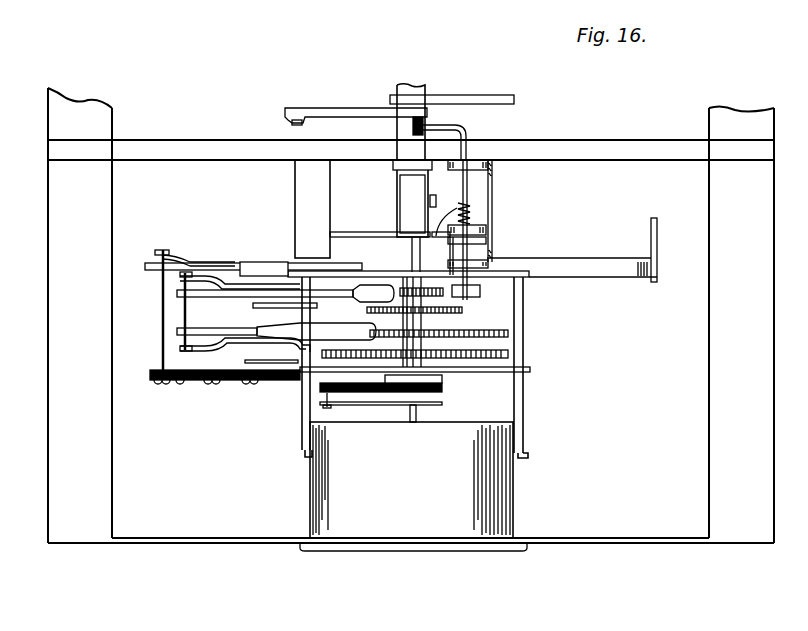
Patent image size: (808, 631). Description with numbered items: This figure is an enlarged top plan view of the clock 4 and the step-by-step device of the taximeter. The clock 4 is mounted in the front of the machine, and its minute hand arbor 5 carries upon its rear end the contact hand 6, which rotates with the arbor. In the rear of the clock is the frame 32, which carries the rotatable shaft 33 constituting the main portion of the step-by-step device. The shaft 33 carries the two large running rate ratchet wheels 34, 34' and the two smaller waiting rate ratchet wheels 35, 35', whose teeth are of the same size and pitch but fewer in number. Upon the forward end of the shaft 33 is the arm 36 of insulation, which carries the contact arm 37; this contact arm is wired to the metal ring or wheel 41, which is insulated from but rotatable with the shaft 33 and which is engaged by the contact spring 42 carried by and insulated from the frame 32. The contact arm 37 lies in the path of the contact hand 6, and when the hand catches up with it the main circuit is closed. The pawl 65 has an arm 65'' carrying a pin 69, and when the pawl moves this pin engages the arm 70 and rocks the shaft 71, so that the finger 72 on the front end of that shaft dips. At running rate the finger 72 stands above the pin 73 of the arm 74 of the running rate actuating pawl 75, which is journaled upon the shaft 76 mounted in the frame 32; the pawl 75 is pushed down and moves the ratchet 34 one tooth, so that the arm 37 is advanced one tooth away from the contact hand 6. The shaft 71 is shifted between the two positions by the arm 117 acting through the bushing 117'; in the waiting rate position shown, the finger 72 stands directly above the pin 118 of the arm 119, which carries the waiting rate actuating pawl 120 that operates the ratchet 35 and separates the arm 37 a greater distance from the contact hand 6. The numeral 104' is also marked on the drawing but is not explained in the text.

The clock 4 is at (411, 480).
The minute hand arbor 5 is at (418, 412).
The contact hand 6 is at (333, 408).
The frame 32 is at (522, 350).
The shaft 33 is at (404, 378).
The running rate ratchet wheel 34 is at (475, 319).
The running rate ratchet wheel 34' is at (468, 342).
The waiting rate ratchet wheel 35 is at (408, 304).
The waiting rate ratchet wheel 35' is at (469, 299).
The arm of insulation 36 is at (402, 394).
The contact arm 37 is at (340, 396).
The metal ring or wheel 41 is at (385, 385).
The contact spring 42 is at (305, 382).
The pawl 65 is at (452, 81).
The arm of pawl 65'' is at (356, 101).
The pin 69 is at (413, 126).
The arm 70 is at (434, 128).
The shaft 71 is at (471, 134).
The finger 72 is at (268, 310).
The pin 73 is at (317, 308).
The arm 74 is at (178, 326).
The running rate actuating pawl 75 is at (276, 341).
The shaft 76 is at (210, 382).
The column 104' is at (362, 209).
The arm 117 is at (490, 211).
The bushing 117' is at (494, 252).
The pin 118 is at (300, 311).
The arm 119 is at (181, 310).
The waiting rate actuating pawl 120 is at (285, 290).